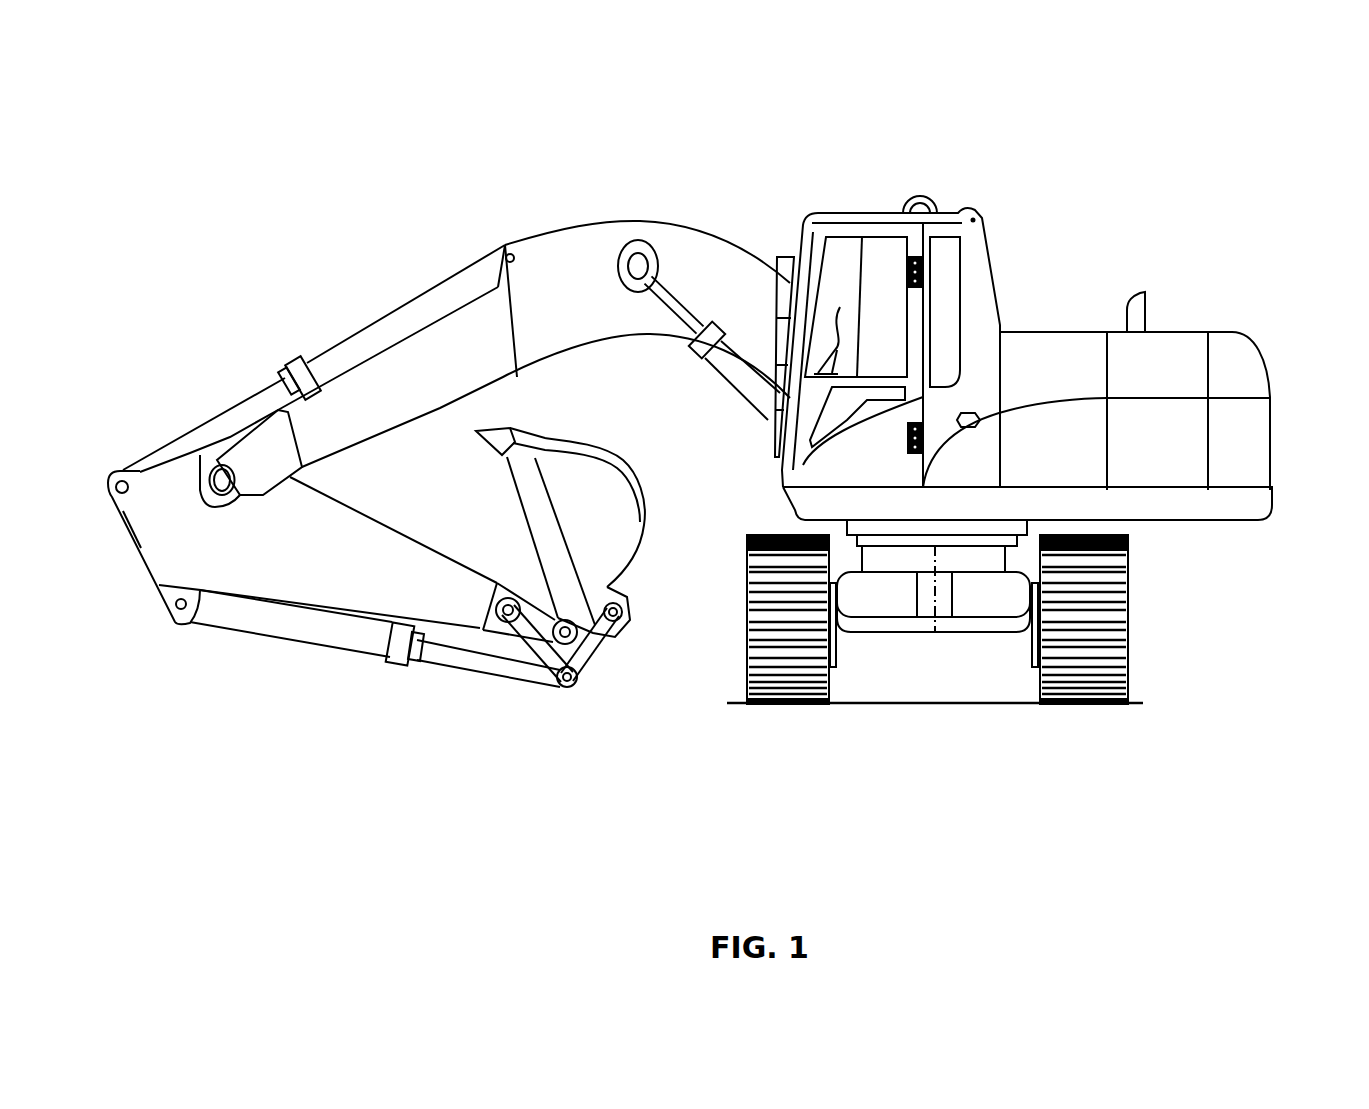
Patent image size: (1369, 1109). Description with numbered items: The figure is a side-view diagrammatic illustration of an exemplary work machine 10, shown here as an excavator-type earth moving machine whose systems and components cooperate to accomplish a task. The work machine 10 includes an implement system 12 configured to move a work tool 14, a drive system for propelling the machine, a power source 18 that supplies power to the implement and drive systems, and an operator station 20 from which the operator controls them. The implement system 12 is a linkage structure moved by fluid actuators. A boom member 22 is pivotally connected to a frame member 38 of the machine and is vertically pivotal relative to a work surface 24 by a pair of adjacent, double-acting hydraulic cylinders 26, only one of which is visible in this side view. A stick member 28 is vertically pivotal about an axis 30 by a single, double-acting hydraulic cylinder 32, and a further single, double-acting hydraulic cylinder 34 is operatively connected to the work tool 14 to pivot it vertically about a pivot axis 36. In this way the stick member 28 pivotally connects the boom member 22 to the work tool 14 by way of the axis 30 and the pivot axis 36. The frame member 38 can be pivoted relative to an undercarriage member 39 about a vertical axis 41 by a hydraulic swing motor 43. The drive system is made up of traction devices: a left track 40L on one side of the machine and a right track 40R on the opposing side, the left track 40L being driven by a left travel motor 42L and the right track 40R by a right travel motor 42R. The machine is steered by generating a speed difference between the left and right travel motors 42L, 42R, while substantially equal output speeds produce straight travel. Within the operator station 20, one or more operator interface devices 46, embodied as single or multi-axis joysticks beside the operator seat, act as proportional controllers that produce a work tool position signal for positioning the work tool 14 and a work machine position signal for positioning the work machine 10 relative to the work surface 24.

The work machine 10 is at (1138, 190).
The implement system 12 is at (800, 213).
The work tool 14 is at (625, 513).
The power source 18 is at (1135, 391).
The operator station 20 is at (843, 250).
The boom member 22 is at (578, 318).
The work surface 24 is at (840, 700).
The hydraulic cylinders 26 is at (730, 363).
The stick member 28 is at (315, 566).
The axis 30 is at (197, 488).
The hydraulic cylinder 32 is at (345, 348).
The hydraulic cylinder 34 is at (282, 628).
The pivot axis 36 is at (595, 660).
The frame member 38 is at (1258, 508).
The undercarriage member 39 is at (983, 603).
The left track 40L is at (745, 642).
The right track 40R is at (1126, 643).
The vertical axis 41 is at (935, 632).
The left travel motor 42L is at (838, 632).
The right travel motor 42R is at (1030, 633).
The hydraulic swing motor 43 is at (916, 592).
The operator interface devices 46 is at (836, 324).